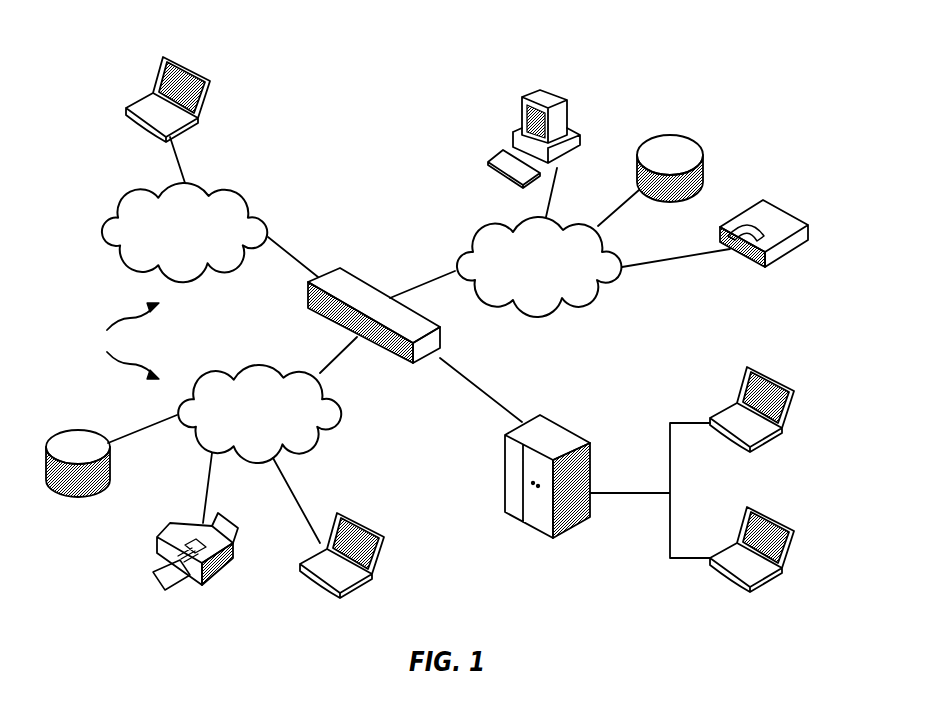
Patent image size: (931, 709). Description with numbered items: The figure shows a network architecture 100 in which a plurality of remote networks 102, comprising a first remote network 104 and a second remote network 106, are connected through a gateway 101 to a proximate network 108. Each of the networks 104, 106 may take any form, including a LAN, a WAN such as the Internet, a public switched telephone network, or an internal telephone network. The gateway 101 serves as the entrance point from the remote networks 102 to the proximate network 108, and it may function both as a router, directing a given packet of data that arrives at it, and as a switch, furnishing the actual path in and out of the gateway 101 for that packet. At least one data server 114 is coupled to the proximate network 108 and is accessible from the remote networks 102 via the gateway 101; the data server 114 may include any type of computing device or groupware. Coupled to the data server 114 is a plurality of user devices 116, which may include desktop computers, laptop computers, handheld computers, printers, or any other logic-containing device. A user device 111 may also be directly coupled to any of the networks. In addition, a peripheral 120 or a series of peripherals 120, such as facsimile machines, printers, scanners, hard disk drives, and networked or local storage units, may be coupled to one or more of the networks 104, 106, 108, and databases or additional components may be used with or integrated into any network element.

The network architecture 100 is at (389, 110).
The gateway 101 is at (397, 362).
The remote networks 102 is at (120, 341).
The first remote network 104 is at (257, 362).
The second remote network 106 is at (247, 197).
The proximate network 108 is at (478, 227).
The user device 111 is at (567, 110).
The data server 114 is at (583, 437).
The user devices 116 is at (207, 73).
The peripheral 120 is at (698, 142).